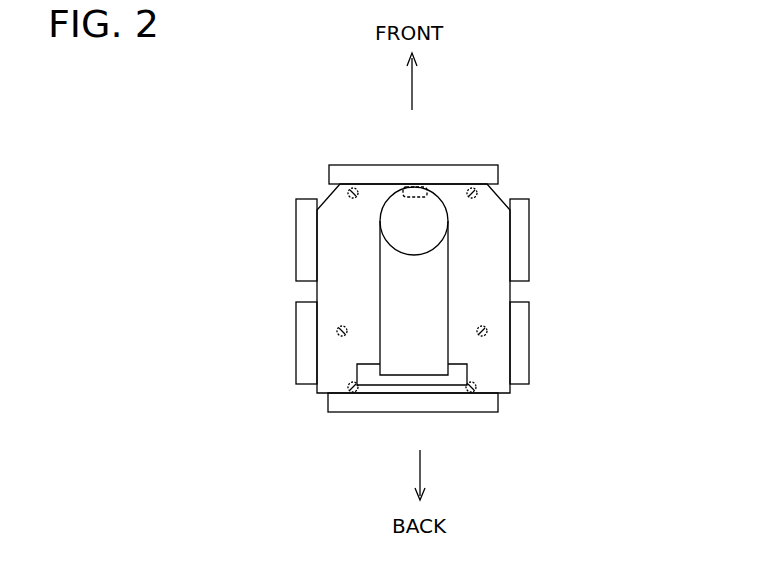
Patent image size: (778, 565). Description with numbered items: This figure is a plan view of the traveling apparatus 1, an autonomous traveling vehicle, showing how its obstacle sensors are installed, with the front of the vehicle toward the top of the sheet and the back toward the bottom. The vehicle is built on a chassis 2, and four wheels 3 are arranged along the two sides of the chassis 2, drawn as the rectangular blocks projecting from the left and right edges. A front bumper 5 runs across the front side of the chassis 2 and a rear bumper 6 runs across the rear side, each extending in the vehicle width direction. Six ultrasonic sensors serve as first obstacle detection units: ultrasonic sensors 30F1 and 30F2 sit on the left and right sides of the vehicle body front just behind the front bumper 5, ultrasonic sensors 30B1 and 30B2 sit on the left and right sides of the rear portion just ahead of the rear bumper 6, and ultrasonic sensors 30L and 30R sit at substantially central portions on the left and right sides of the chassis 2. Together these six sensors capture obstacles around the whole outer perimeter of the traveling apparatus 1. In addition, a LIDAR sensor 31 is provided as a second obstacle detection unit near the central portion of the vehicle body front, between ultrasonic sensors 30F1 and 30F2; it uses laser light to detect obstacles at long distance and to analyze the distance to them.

The traveling apparatus 1 is at (578, 186).
The chassis 2 is at (490, 222).
The wheels 3 is at (308, 240).
The bumper 5 is at (389, 176).
The bumper 6 is at (388, 398).
The LIDAR sensor 31 is at (415, 186).
The ultrasonic sensor 30F1 is at (350, 186).
The ultrasonic sensor 30F2 is at (475, 189).
The ultrasonic sensor 30L is at (336, 326).
The ultrasonic sensor 30R is at (488, 326).
The ultrasonic sensor 30B1 is at (352, 392).
The ultrasonic sensor 30B2 is at (473, 392).